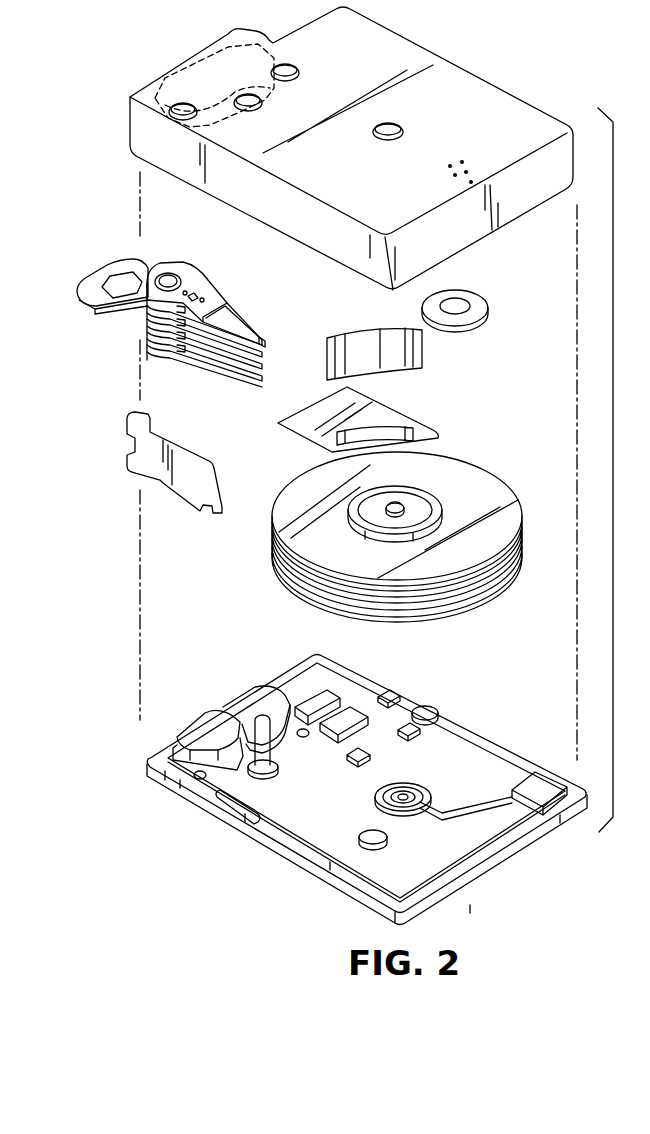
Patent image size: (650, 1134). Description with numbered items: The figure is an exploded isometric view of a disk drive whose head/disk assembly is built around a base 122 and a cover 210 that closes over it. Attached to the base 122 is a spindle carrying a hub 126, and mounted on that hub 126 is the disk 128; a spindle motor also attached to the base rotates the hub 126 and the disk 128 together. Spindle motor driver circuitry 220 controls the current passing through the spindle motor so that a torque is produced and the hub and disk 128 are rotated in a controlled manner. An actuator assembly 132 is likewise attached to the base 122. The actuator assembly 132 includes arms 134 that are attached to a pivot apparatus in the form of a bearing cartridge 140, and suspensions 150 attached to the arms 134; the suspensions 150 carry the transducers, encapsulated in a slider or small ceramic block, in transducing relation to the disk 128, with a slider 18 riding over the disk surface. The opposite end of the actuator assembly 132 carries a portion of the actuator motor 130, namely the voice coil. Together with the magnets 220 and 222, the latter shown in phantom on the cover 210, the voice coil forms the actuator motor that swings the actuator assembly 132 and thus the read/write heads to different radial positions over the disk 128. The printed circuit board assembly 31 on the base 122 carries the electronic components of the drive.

The head slider 18 is at (263, 335).
The printed circuit board assembly 31 is at (402, 683).
The base 122 is at (465, 748).
The hub 126 is at (400, 506).
The disk 128 is at (497, 492).
The actuator motor 130 is at (100, 275).
The actuator assembly 132 is at (163, 363).
The arms 134 is at (197, 275).
The bearing cartridge 140 is at (168, 276).
The suspensions 150 is at (237, 315).
The cover 210 is at (482, 97).
The spindle motor driver circuitry 220 is at (198, 712).
The magnet 222 is at (215, 57).